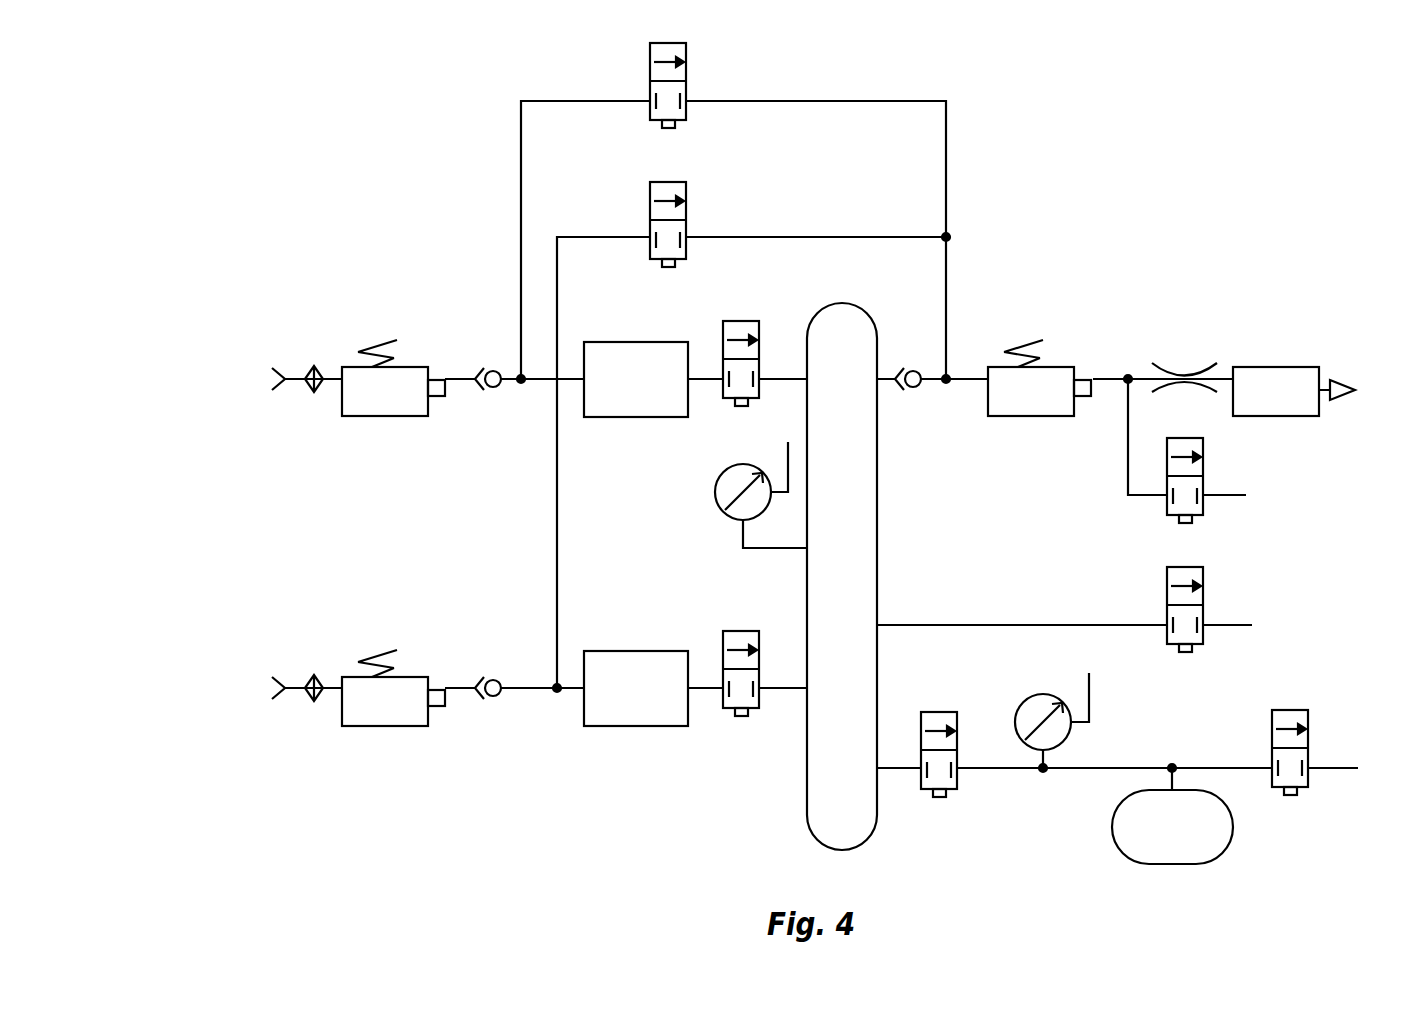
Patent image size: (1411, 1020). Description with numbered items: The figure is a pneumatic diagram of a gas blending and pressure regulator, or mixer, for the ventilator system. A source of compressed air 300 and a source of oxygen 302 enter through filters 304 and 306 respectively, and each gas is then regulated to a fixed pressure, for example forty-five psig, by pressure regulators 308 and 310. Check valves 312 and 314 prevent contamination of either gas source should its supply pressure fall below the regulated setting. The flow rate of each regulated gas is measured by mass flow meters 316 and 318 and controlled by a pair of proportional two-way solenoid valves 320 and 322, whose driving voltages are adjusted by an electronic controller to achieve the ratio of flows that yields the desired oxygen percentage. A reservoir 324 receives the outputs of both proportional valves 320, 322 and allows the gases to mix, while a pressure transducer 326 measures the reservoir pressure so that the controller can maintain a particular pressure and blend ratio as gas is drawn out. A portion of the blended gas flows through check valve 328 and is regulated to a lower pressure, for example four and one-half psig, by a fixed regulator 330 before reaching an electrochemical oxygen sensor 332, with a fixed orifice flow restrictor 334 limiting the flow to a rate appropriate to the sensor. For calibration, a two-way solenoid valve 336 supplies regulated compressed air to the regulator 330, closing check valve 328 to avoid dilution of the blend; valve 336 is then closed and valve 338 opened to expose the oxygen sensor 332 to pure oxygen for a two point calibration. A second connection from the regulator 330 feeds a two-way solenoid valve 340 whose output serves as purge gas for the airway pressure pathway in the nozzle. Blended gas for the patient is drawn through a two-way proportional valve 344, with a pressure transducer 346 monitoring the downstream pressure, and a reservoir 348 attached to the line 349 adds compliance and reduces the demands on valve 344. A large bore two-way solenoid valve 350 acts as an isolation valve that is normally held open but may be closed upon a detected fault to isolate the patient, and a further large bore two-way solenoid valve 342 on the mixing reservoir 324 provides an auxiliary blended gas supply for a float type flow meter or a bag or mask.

The source of compressed air 300 is at (272, 690).
The source of oxygen 302 is at (272, 378).
The filter 304 is at (312, 675).
The filter 306 is at (312, 366).
The pressure regulator 308 is at (368, 718).
The pressure regulator 310 is at (368, 410).
The check valve 312 is at (493, 680).
The check valve 314 is at (493, 370).
The mass flow meter 316 is at (633, 717).
The mass flow meter 318 is at (618, 395).
The proportional two-way solenoid valve 320 is at (728, 708).
The proportional two-way solenoid valve 322 is at (728, 397).
The reservoir 324 is at (822, 793).
The pressure transducer 326 is at (718, 488).
The check valve 328 is at (913, 390).
The fixed regulator 330 is at (1058, 407).
The electrochemical oxygen sensor 332 is at (1288, 402).
The fixed orifice flow restrictor 334 is at (1190, 372).
The two-way solenoid valve 336 is at (686, 255).
The valve 338 is at (686, 118).
The two-way solenoid valve 340 is at (1204, 507).
The large bore two-way solenoid valve 342 is at (1205, 637).
The two-way proportional valve 344 is at (957, 790).
The pressure transducer 346 is at (1072, 736).
The reservoir 348 is at (1233, 840).
The line 349 is at (1229, 764).
The large bore two-way solenoid valve 350 is at (1308, 782).